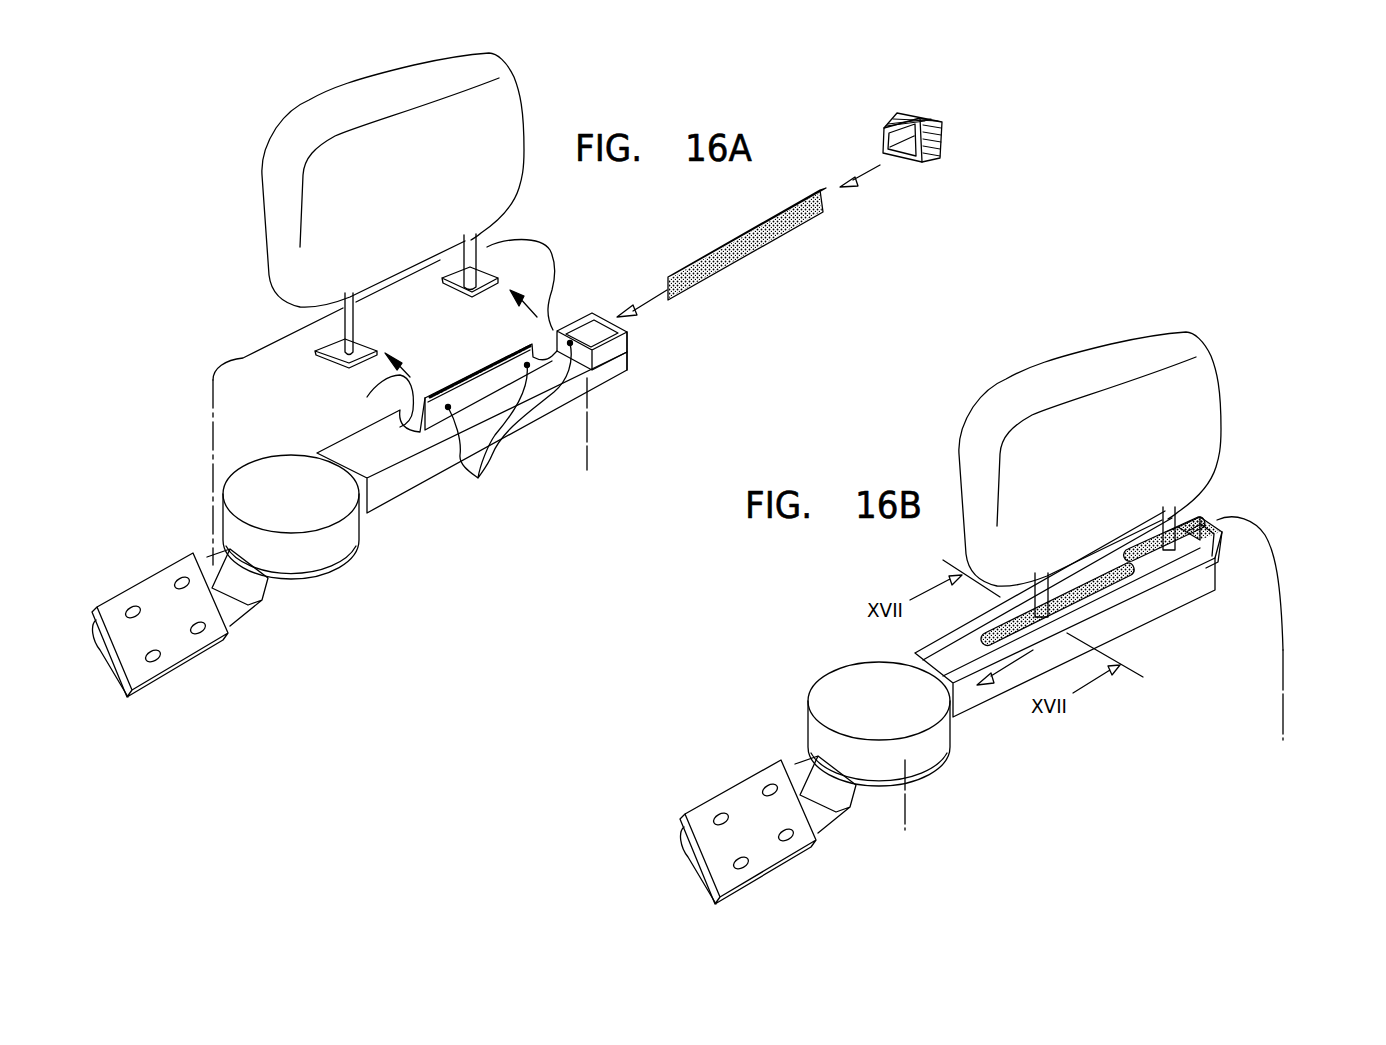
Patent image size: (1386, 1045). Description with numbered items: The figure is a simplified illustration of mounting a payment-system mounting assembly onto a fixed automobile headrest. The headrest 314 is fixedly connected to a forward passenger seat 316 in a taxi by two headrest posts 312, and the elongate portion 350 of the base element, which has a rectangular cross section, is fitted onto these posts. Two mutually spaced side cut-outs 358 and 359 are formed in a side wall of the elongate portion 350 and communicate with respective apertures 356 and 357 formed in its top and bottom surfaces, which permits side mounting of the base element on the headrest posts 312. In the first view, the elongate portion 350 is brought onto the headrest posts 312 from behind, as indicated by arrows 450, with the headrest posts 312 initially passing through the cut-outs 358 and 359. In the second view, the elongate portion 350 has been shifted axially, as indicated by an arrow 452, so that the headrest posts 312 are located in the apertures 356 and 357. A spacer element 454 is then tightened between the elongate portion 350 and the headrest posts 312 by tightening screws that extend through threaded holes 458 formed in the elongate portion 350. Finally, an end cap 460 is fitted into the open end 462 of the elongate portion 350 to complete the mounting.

In FIG. 16A, the headrest posts 312 is at (340, 317).
In FIG. 16B, the headrest posts 312 is at (1047, 573).
In FIG. 16A, the headrest 314 is at (510, 121).
In FIG. 16B, the headrest 314 is at (1200, 382).
In FIG. 16A, the forward passenger seat 316 is at (212, 366).
In FIG. 16B, the forward passenger seat 316 is at (1260, 690).
In FIG. 16A, the elongate portion 350 is at (421, 488).
In FIG. 16B, the aperture 356 is at (1100, 592).
In FIG. 16B, the aperture 357 is at (1186, 546).
In FIG. 16A, the side cut-out 358 is at (417, 410).
In FIG. 16A, the side cut-out 359 is at (570, 343).
In FIG. 16A, the arrows 450 is at (367, 397).
In FIG. 16B, the arrow 452 is at (1000, 688).
In FIG. 16A, the spacer element 454 is at (750, 247).
In FIG. 16B, the spacer element 454 is at (1127, 577).
In FIG. 16A, the threaded holes 458 is at (478, 478).
In FIG. 16A, the end cap 460 is at (904, 150).
In FIG. 16B, the end cap 460 is at (1220, 538).
In FIG. 16A, the open end 462 is at (630, 337).